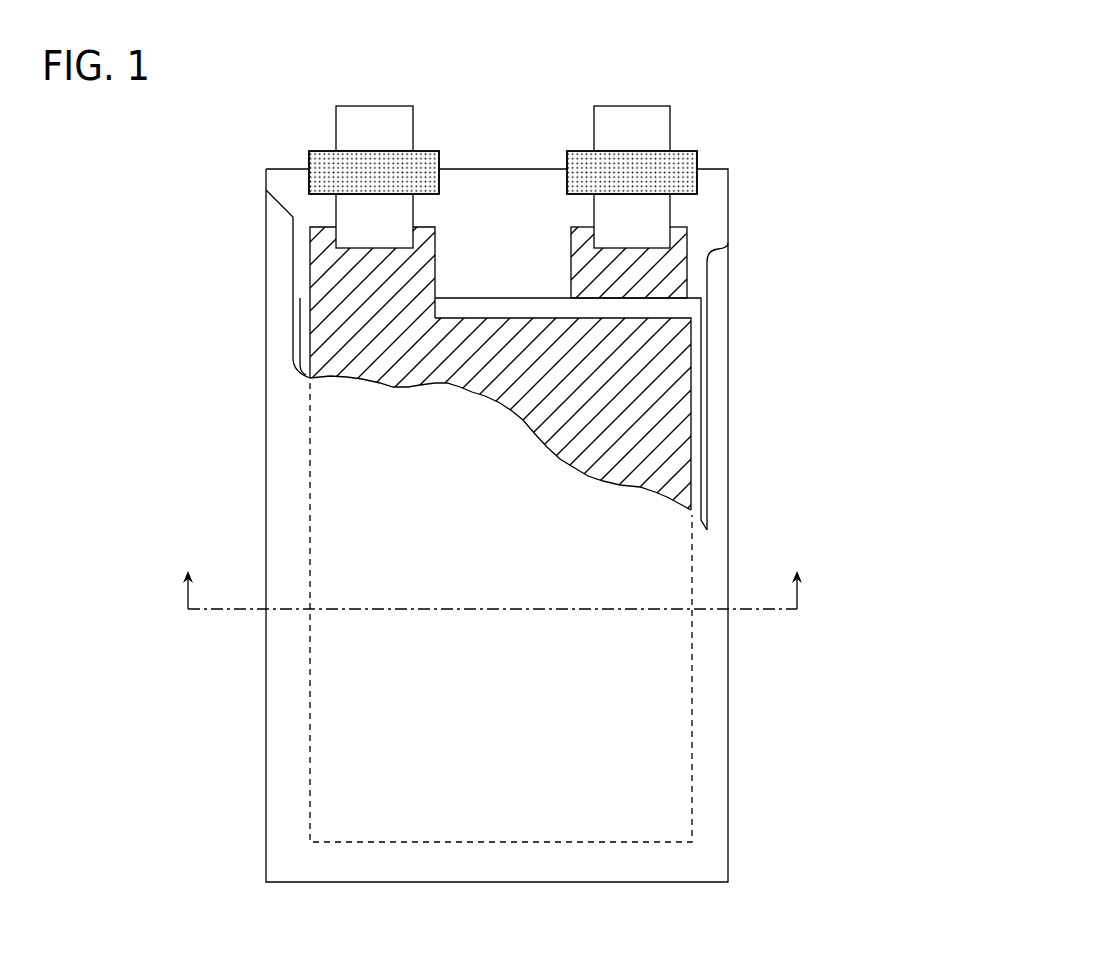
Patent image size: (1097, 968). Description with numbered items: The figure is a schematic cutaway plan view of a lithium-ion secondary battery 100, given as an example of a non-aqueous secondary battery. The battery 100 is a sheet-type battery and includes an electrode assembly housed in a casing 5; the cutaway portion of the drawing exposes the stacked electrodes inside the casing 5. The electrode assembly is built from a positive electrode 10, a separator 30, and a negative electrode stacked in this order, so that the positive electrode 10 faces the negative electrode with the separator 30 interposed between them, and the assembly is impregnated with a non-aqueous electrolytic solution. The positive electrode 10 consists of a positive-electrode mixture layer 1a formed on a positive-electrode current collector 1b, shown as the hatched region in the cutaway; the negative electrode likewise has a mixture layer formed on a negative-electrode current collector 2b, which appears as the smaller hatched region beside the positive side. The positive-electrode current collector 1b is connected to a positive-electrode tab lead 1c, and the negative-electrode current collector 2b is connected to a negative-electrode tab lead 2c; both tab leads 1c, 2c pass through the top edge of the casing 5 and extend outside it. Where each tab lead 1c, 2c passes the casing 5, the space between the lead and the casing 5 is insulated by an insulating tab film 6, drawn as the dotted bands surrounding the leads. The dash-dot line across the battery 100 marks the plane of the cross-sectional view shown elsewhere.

The lithium-ion secondary battery 100 is at (792, 27).
The casing 5 is at (618, 882).
The insulating tab film 6 is at (318, 162).
The positive-electrode tab lead 1c is at (367, 120).
The negative-electrode tab lead 2c is at (630, 120).
The positive-electrode current collector 1b is at (324, 240).
The negative-electrode current collector 2b is at (680, 240).
The separator 30 is at (695, 352).
The positive electrode 10 is at (583, 368).
The positive-electrode mixture layer 1a is at (676, 422).